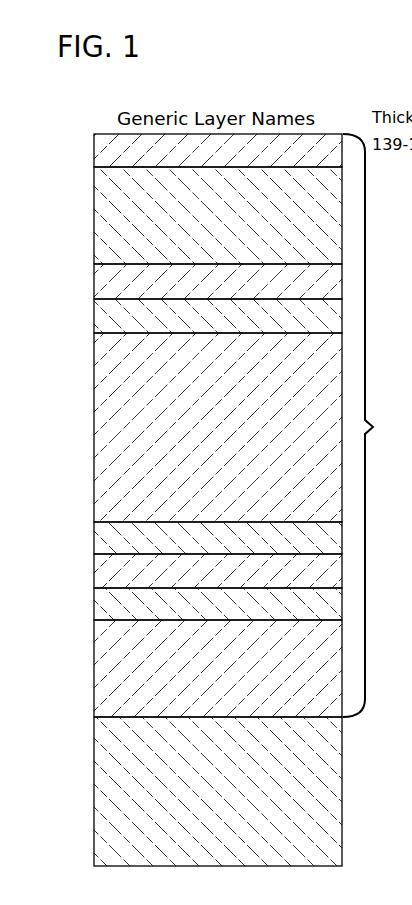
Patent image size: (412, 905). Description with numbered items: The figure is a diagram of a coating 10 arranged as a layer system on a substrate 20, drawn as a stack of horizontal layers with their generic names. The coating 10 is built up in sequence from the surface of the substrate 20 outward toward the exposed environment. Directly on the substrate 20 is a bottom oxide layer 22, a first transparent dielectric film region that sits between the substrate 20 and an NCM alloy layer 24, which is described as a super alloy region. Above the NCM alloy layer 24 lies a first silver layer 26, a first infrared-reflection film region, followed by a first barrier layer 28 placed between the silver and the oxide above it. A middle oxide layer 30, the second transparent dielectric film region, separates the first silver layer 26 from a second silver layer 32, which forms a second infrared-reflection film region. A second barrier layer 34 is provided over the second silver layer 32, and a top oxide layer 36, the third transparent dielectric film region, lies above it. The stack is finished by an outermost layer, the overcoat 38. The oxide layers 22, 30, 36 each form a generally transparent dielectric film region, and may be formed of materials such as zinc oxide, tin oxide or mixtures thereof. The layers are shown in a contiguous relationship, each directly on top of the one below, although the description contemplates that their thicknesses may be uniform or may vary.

The coating 10 is at (226, 413).
The substrate 20 is at (105, 798).
The bottom oxide layer 22 is at (103, 675).
The NCM alloy layer 24 is at (103, 610).
The first silver layer 26 is at (103, 573).
The first barrier layer 28 is at (103, 537).
The middle oxide layer 30 is at (103, 405).
The second silver layer 32 is at (103, 315).
The second barrier layer 34 is at (103, 283).
The top oxide layer 36 is at (103, 217).
The overcoat 38 is at (103, 155).